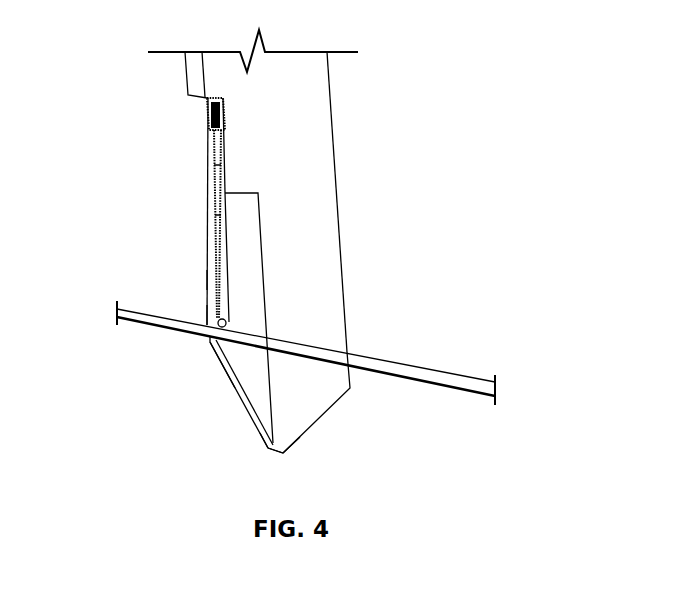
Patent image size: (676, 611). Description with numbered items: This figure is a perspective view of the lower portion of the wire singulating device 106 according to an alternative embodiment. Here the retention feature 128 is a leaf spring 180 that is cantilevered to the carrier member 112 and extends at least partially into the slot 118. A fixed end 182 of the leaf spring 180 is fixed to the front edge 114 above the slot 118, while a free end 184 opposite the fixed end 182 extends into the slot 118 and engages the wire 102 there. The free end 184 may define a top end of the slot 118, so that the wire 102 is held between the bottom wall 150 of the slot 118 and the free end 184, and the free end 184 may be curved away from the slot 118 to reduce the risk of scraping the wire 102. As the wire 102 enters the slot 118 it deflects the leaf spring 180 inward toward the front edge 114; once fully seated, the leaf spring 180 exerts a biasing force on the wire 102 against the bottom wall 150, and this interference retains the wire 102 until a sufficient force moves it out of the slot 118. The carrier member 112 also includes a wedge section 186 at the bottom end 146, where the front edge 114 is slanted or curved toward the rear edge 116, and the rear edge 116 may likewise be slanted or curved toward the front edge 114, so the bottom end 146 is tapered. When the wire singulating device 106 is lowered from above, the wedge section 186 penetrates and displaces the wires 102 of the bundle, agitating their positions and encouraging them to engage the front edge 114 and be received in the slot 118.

The wire singulating device 106 is at (97, 161).
The carrier member 112 is at (272, 155).
The fixed end 182 is at (199, 121).
The leaf spring 180 is at (207, 242).
The retention feature 128 is at (205, 277).
The free end 184 is at (199, 312).
The front edge 114 is at (223, 288).
The slot 118 is at (233, 319).
The rear edge 116 is at (347, 323).
The wire 102 is at (173, 323).
The bottom wall 150 is at (225, 372).
The bottom end 146 is at (266, 455).
The wedge section 186 is at (290, 437).